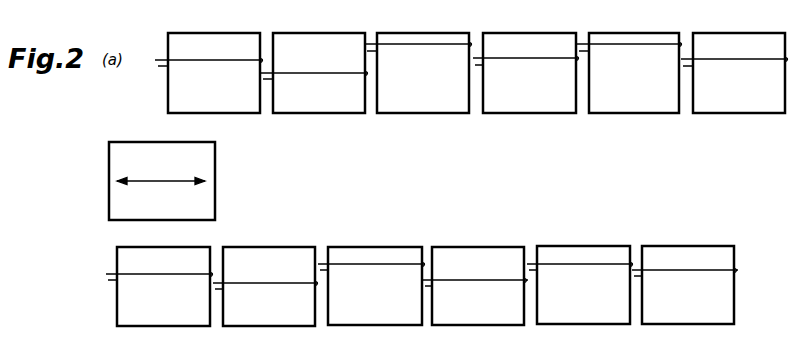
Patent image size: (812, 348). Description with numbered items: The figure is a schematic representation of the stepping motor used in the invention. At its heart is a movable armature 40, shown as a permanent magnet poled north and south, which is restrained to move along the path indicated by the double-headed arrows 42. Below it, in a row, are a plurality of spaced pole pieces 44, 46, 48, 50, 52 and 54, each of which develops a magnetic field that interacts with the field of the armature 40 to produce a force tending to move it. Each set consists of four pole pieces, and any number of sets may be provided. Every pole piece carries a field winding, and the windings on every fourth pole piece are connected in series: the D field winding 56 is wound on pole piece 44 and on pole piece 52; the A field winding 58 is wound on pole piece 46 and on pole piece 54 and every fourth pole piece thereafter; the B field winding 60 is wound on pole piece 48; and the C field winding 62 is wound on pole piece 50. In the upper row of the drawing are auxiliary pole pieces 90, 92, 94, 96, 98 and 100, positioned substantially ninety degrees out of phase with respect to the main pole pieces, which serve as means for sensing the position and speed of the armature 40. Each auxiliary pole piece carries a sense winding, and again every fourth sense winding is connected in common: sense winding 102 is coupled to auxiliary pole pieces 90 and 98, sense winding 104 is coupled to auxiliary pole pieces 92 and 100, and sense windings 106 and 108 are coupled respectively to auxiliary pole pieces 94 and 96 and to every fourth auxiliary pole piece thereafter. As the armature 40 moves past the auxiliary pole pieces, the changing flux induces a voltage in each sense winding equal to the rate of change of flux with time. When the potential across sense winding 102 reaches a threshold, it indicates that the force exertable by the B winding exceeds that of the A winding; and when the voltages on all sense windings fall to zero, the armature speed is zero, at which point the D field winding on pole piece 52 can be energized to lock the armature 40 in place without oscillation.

The movable armature 40 is at (215, 163).
The arrows 42 is at (180, 179).
The pole piece 44 is at (185, 247).
The pole piece 46 is at (281, 247).
The pole piece 48 is at (389, 247).
The pole piece 50 is at (493, 247).
The pole piece 52 is at (597, 246).
The pole piece 54 is at (705, 246).
The D field winding 56 is at (172, 275).
The A field winding 58 is at (276, 284).
The B field winding 60 is at (418, 265).
The C field winding 62 is at (486, 281).
The auxiliary pole piece 90 is at (225, 33).
The auxiliary pole piece 92 is at (327, 33).
The auxiliary pole piece 94 is at (427, 33).
The auxiliary pole piece 96 is at (534, 33).
The auxiliary pole piece 98 is at (637, 33).
The auxiliary pole piece 100 is at (740, 33).
The sense winding 102 is at (199, 61).
The sense winding 104 is at (309, 74).
The sense winding 106 is at (460, 45).
The sense winding 108 is at (521, 59).